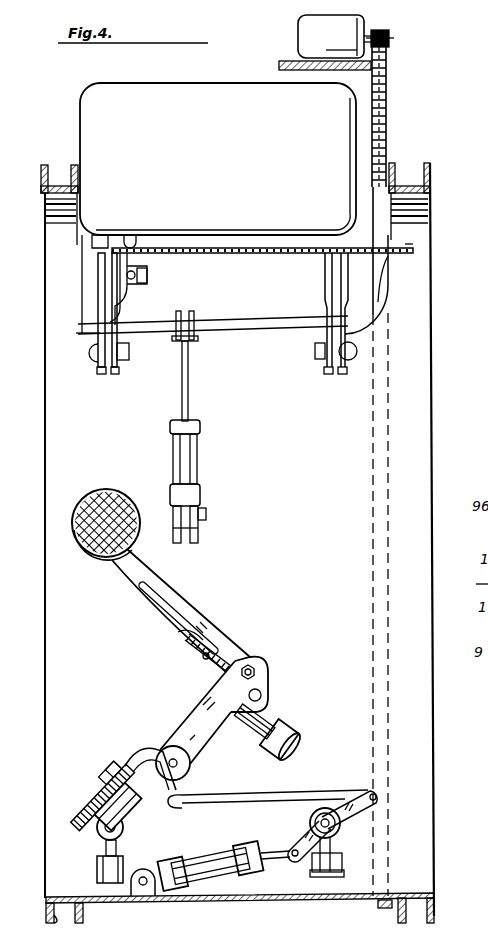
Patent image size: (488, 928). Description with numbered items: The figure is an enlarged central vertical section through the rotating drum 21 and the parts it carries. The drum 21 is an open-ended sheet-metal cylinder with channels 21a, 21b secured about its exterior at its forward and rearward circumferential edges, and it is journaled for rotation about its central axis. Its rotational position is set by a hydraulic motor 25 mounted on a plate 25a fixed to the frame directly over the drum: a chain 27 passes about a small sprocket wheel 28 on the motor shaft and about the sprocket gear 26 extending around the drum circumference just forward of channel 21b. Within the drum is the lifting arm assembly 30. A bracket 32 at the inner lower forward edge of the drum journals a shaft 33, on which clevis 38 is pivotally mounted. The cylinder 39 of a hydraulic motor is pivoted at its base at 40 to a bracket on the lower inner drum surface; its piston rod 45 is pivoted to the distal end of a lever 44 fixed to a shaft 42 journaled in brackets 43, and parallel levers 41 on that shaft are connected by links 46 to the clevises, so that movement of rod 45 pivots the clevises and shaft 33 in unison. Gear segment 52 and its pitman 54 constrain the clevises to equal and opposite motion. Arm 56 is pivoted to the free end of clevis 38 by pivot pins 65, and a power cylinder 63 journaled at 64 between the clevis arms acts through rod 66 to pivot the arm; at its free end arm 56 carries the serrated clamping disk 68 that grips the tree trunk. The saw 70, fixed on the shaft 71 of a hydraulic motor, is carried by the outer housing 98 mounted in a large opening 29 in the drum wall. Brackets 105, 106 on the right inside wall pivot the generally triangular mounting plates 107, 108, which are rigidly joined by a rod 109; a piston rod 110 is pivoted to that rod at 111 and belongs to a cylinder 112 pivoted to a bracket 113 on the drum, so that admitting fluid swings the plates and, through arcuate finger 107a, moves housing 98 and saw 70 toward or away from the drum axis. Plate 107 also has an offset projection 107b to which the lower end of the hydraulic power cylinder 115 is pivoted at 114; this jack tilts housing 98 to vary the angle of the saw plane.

The drum 21 is at (439, 740).
The channel 21a is at (50, 172).
The channel 21b is at (430, 175).
The hydraulic motor 25 is at (351, 25).
The plate 25a is at (284, 61).
The sprocket gear 26 is at (388, 908).
The chain 27 is at (387, 98).
The sprocket wheel 28 is at (389, 44).
The opening 29 is at (380, 298).
The lifting arm assembly 30 is at (162, 633).
The bracket 32 is at (100, 874).
The shaft 33 is at (105, 833).
The clevis 38 is at (203, 716).
The cylinder 39 is at (203, 860).
The pivot 40 is at (145, 876).
The lever 41 is at (378, 813).
The shaft 42 is at (331, 830).
The bracket 43 is at (334, 878).
The lever 44 is at (306, 838).
The piston rod 45 is at (280, 860).
The link 46 is at (297, 790).
The gear segment 52 is at (93, 810).
The pitman 54 is at (150, 748).
The arm 56 is at (197, 615).
The power cylinder 63 is at (270, 720).
The journal 64 is at (262, 694).
The pivot pin 65 is at (258, 669).
The rod 66 is at (215, 675).
The clamping disk 68 is at (108, 492).
The saw 70 is at (414, 250).
The shaft 71 is at (264, 238).
The outer housing 98 is at (200, 92).
The bracket 105 is at (116, 373).
The bracket 106 is at (342, 375).
The mounting plate 107 is at (98, 336).
The arcuate finger 107a is at (102, 240).
The projection 107b is at (130, 303).
The mounting plate 108 is at (336, 288).
The rod 109 is at (272, 330).
The piston rod 110 is at (190, 386).
The pivot 111 is at (196, 340).
The cylinder 112 is at (198, 460).
The bracket 113 is at (200, 536).
The pivot 114 is at (148, 275).
The hydraulic power cylinder 115 is at (140, 246).